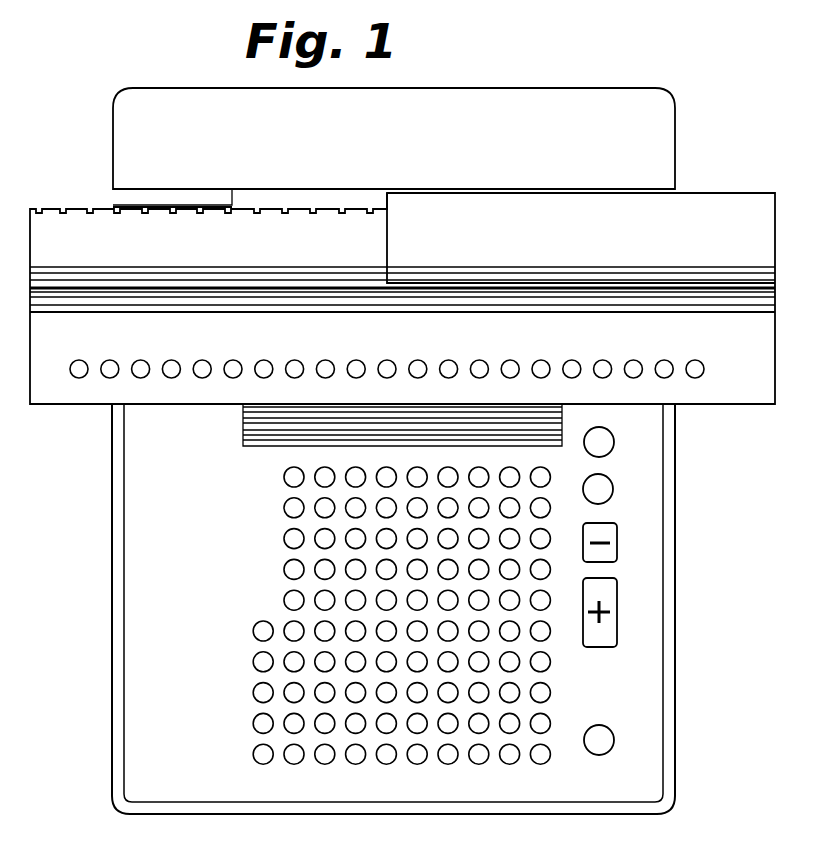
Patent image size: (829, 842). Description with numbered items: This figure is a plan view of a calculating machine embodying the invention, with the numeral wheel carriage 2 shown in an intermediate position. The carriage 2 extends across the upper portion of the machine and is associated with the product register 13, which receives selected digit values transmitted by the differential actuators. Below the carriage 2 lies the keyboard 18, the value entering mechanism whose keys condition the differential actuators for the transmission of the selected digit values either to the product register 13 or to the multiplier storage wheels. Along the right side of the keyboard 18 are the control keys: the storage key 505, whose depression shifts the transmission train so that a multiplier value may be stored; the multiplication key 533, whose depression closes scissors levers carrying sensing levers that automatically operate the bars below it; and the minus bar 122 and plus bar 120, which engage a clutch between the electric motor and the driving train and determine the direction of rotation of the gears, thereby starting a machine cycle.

The housing panel 2 is at (718, 200).
The product register 13 is at (450, 369).
The keyboard 18 is at (257, 690).
The storage key 505 is at (641, 440).
The multiplication key 533 is at (635, 495).
The minus bar 122 is at (641, 551).
The plus bar 120 is at (641, 621).